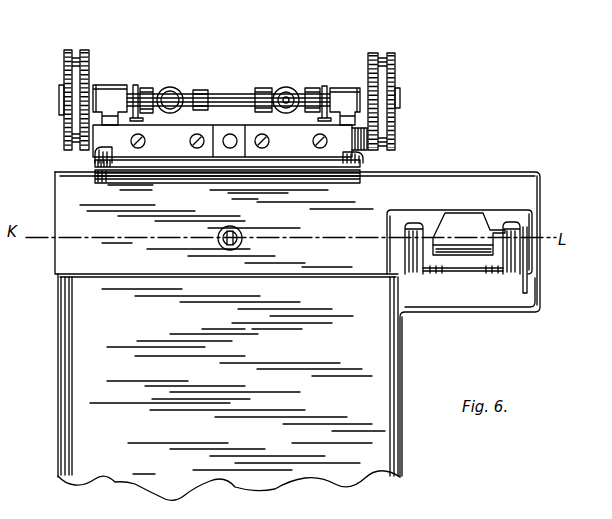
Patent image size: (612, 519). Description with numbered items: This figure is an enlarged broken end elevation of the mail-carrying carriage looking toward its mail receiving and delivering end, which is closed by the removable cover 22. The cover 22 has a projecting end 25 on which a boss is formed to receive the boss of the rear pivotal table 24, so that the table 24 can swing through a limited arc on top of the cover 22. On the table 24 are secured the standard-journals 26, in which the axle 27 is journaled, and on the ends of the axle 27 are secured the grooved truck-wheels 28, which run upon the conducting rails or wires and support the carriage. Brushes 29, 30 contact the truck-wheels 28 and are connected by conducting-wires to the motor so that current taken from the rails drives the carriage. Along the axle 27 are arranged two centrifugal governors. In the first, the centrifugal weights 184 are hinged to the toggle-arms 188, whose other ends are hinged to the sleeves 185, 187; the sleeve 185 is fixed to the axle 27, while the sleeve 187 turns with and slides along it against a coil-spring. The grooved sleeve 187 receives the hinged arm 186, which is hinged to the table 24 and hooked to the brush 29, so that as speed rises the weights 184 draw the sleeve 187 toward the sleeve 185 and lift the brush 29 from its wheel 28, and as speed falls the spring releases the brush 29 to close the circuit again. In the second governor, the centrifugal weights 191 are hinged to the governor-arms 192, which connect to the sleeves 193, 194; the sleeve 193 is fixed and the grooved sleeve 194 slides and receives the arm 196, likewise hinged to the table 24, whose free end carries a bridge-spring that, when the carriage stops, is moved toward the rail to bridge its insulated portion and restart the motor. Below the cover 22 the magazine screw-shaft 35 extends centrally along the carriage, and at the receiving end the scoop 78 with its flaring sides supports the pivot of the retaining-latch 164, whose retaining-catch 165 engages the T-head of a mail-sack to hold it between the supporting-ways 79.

The removable cover 22 is at (438, 183).
The rear pivotal table 24 is at (95, 164).
The projecting end of the cover 25 is at (196, 176).
The standard-journals 26 is at (111, 85).
The axle 27 is at (233, 96).
The grooved truck-wheels 28 is at (62, 80).
The brush 29 is at (95, 154).
The brush 30 is at (362, 158).
The magazine screw-shaft 35 is at (242, 233).
The scoop 78 is at (408, 262).
The supporting-ways 79 is at (483, 274).
The retaining-latch 164 is at (490, 222).
The retaining-catch 165 is at (467, 232).
The centrifugal weights 184 is at (229, 129).
The sleeve 185 is at (205, 92).
The hinged arm 186 is at (136, 85).
The sleeve 187 is at (156, 96).
The toggle-arms 188 is at (180, 88).
The centrifugal weights 191 is at (262, 124).
The governor-arms 192 is at (272, 92).
The sleeve 193 is at (275, 96).
The sleeve 194 is at (311, 90).
The arm 196 is at (324, 86).